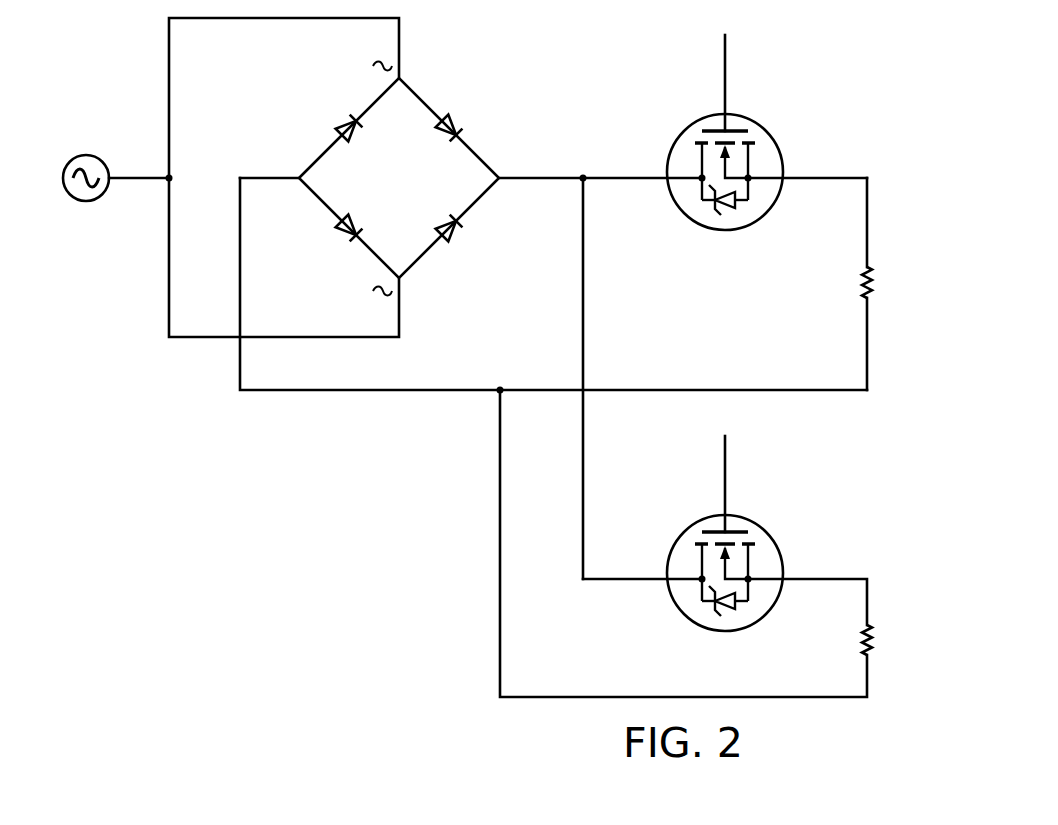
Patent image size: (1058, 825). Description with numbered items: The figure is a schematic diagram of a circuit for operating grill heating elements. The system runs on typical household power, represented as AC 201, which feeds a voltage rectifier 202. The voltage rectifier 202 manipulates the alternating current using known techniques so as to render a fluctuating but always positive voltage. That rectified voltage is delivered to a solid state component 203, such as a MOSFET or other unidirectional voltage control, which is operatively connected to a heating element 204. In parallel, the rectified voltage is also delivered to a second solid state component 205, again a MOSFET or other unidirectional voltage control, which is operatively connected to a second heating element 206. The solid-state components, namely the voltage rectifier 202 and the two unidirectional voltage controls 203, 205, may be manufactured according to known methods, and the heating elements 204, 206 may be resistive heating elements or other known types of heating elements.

The AC 201 is at (87, 202).
The voltage rectifier 202 is at (481, 93).
The solid state component 203 is at (798, 109).
The heating element 204 is at (875, 285).
The second solid state component 205 is at (798, 510).
The heating element 206 is at (875, 642).